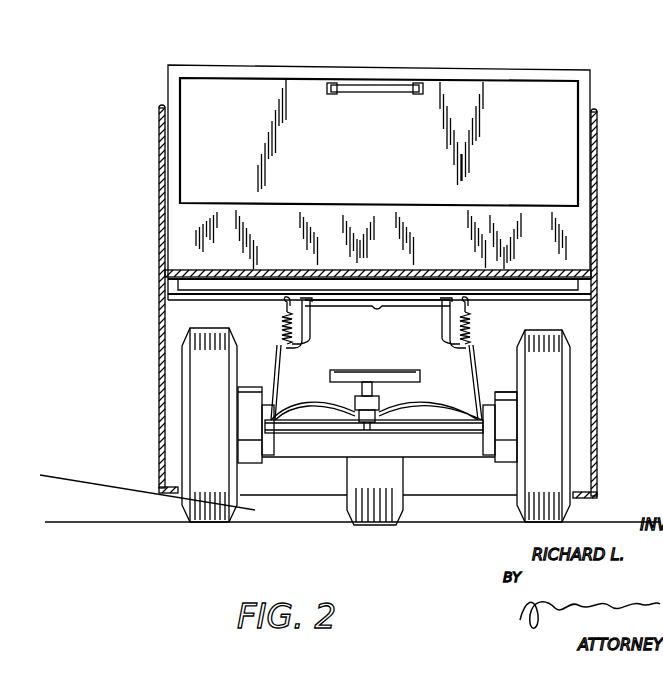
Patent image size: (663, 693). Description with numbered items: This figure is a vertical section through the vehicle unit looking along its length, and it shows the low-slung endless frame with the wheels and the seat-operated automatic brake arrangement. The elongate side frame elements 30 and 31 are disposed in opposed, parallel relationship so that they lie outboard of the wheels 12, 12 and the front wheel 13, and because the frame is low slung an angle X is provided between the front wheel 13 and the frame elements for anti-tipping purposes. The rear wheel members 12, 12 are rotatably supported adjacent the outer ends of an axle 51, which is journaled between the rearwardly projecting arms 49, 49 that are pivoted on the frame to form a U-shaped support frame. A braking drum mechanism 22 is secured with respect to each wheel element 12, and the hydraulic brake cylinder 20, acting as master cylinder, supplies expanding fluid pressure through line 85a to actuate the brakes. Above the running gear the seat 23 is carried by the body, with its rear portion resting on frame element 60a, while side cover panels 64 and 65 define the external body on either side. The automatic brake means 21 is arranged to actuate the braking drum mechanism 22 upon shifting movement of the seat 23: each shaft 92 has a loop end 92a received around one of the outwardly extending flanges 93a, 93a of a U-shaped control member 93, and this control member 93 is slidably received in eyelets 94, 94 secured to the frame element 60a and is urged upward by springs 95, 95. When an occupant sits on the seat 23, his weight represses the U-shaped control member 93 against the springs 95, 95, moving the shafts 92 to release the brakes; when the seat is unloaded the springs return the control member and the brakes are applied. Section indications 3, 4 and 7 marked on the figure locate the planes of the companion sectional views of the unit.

The section line 3- 3 is at (433, 68).
The section line 4- 4 is at (150, 290).
The section line 7- 7 is at (270, 367).
The wheel 12 is at (213, 527).
The front wheel 13 is at (404, 505).
The hydraulic brake cylinder 20 is at (376, 404).
The automatic brake means 21 is at (472, 446).
The braking drum mechanism 22 is at (497, 392).
The seat 23 is at (555, 70).
The side frame element 30 is at (598, 490).
The side frame element 31 is at (158, 480).
The rearwardly projecting arm 49 is at (274, 455).
The axle 51 is at (425, 428).
The frame element 60a is at (197, 302).
The side cover panel 64 is at (598, 228).
The side cover panel 65 is at (157, 218).
The line 85a is at (330, 394).
The shaft 92 is at (281, 384).
The loop end 92a is at (284, 318).
The U-shaped control member 93 is at (378, 300).
The outwardly extending flange 93a is at (312, 345).
The eyelet 94 is at (312, 326).
The spring 95 is at (286, 308).
The angle X is at (67, 478).